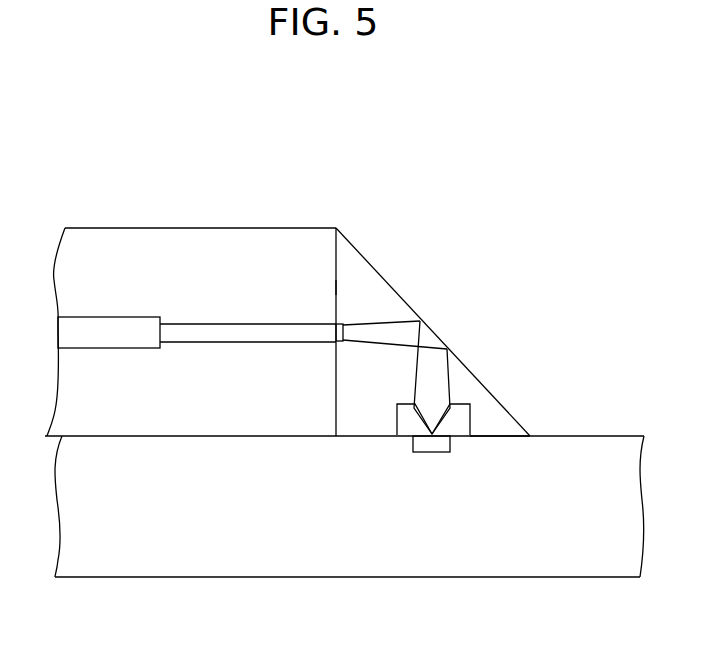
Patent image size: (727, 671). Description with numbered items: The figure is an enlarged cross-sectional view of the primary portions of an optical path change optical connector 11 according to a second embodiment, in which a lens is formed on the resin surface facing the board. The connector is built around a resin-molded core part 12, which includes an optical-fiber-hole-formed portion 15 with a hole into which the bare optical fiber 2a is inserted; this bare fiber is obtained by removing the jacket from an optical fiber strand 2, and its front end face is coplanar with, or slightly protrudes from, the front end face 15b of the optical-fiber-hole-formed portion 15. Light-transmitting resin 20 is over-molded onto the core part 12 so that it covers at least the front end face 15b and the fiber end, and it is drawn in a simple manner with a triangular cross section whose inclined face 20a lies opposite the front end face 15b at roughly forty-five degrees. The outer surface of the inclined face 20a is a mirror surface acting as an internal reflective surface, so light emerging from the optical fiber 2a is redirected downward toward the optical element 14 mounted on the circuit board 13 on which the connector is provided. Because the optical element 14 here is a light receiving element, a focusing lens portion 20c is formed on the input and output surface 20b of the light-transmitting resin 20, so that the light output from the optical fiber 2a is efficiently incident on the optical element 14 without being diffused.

The optical fiber strand 2 is at (88, 325).
The optical fiber 2a is at (233, 333).
The optical path change optical connector 11 is at (182, 175).
The core part 12 is at (132, 240).
The circuit board 13 is at (297, 557).
The optical element 14 is at (435, 448).
The optical-fiber-hole-formed portion 15 is at (300, 270).
The front end face 15b is at (337, 287).
The light-transmitting resin 20 is at (385, 298).
The inclined face 20a is at (476, 380).
The input and output surface 20b is at (486, 437).
The focusing lens portion 20c is at (412, 406).